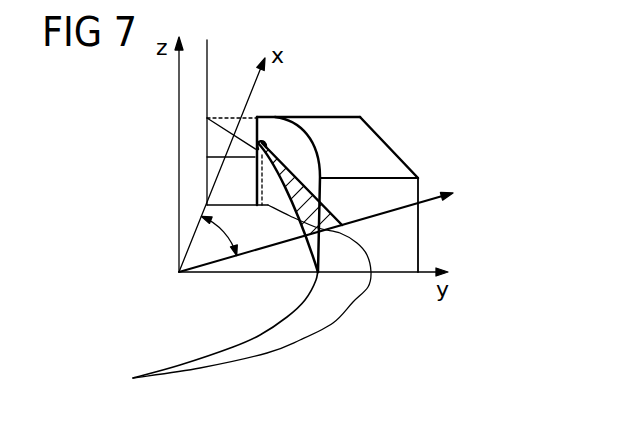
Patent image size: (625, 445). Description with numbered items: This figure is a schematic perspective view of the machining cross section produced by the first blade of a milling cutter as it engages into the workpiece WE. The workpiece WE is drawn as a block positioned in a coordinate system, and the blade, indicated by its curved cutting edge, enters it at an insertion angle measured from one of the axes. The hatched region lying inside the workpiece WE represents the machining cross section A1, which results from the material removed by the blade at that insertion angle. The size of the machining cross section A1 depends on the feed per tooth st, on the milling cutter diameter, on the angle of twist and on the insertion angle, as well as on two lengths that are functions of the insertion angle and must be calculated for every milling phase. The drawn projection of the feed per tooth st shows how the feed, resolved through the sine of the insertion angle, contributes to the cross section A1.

The workpiece WE is at (391, 167).
The machining cross section A1 is at (325, 116).
The feed per tooth st is at (334, 232).